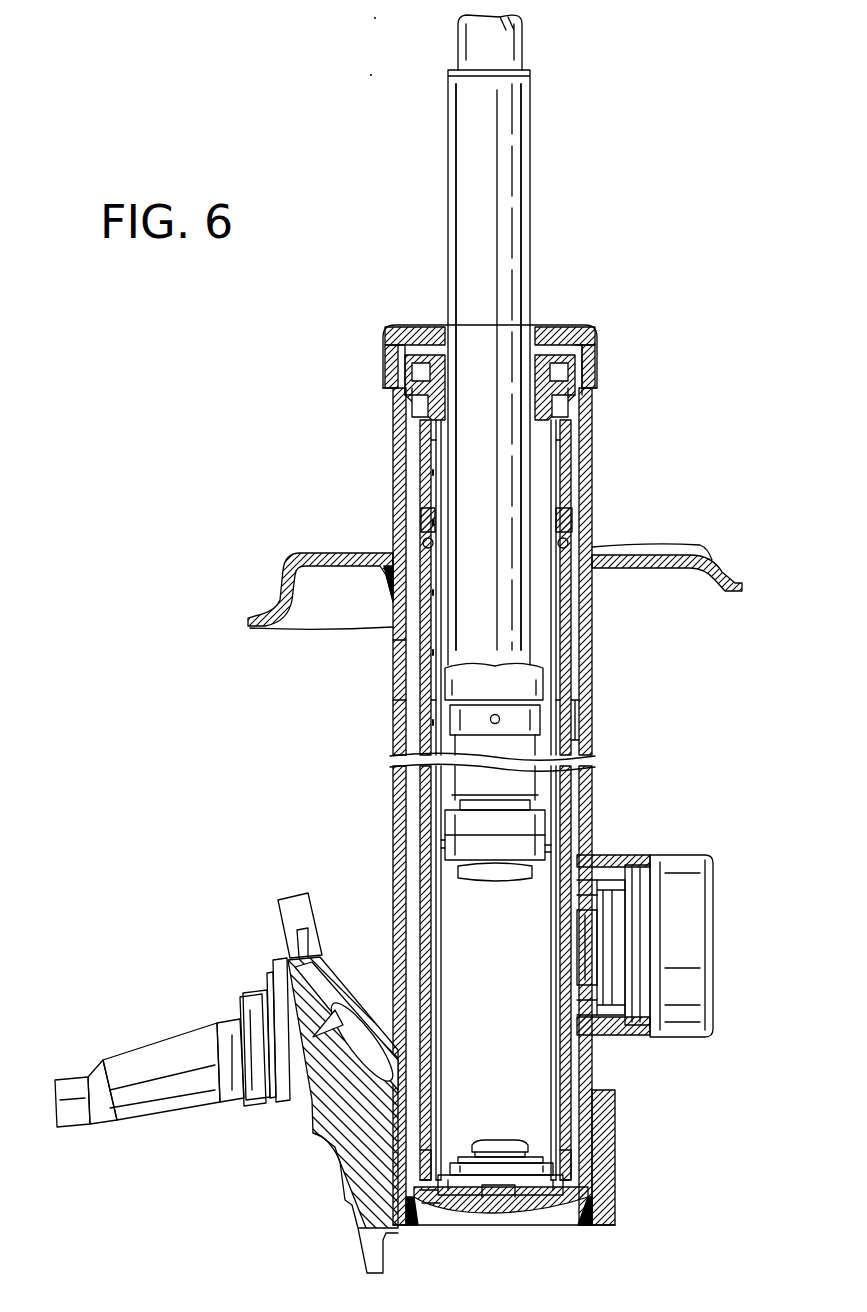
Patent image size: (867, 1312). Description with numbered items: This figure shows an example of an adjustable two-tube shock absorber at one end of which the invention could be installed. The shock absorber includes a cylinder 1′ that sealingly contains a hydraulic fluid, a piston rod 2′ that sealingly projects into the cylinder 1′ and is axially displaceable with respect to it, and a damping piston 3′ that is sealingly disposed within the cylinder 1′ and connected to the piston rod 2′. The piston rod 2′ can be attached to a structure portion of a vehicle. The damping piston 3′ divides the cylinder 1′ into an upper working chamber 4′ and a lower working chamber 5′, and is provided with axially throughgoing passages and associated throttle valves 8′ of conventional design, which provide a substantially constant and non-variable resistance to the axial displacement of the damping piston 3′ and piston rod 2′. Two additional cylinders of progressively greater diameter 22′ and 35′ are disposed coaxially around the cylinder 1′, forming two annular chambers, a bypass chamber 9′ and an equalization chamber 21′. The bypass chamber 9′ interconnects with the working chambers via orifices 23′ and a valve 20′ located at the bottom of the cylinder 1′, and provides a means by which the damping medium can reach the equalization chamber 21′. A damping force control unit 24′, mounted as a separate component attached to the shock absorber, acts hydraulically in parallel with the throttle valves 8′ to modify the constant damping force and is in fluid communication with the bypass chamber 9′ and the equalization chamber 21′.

The cylinder 1′ is at (553, 438).
The piston rod 2′ is at (505, 276).
The damping piston 3′ is at (540, 830).
The upper working chamber 4′ is at (543, 636).
The lower working chamber 5′ is at (535, 1062).
The throttle valves 8′ is at (445, 844).
The bypass chamber 9′ is at (572, 727).
The valve 20′ is at (507, 1190).
The equalization chamber 21′ is at (432, 1198).
The additional cylinder 22′ is at (572, 672).
The orifices 23′ is at (428, 545).
The damping force control unit 24′ is at (690, 958).
The additional cylinder 35′ is at (396, 692).